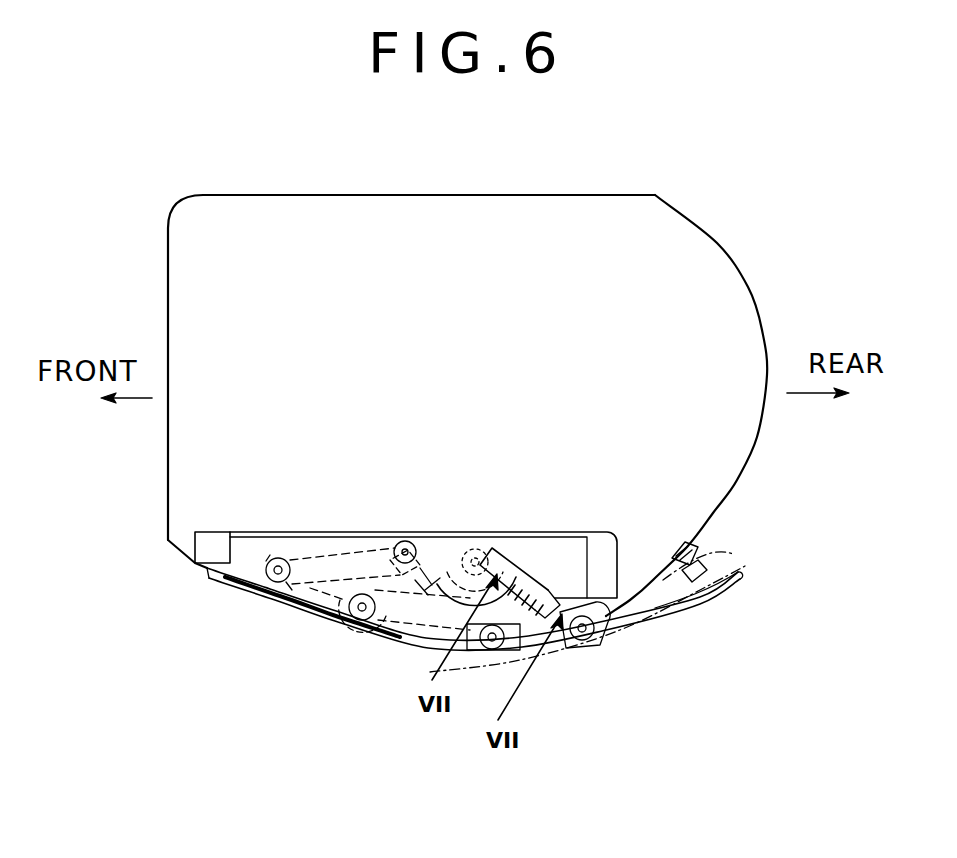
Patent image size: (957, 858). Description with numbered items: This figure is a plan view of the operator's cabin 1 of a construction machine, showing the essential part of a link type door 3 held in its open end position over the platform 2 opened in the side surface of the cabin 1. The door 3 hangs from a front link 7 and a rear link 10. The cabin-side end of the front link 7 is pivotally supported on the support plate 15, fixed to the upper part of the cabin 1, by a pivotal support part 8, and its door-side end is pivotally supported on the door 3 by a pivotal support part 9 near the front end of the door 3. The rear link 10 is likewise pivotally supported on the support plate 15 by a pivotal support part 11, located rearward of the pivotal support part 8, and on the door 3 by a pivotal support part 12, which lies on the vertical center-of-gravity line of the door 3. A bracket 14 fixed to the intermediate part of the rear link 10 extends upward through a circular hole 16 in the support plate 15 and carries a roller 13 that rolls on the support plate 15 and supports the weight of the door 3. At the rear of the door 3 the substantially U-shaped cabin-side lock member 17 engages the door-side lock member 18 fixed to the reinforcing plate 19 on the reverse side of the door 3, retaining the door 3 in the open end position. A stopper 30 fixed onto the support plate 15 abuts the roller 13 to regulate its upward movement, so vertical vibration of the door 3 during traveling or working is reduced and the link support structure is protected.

The operator's cabin 1 is at (717, 243).
The platform 2 is at (572, 641).
The door 3 is at (268, 602).
The front link 7 is at (312, 560).
The pivotal support part 8 is at (405, 540).
The pivotal support part 9 is at (278, 557).
The rear link 10 is at (392, 643).
The pivotal support part 11 is at (498, 548).
The pivotal support part 12 is at (343, 622).
The roller 13 is at (390, 557).
The bracket 14 is at (437, 584).
The support plate 15 is at (536, 550).
The circular hole 16 is at (470, 648).
The cabin-side lock member 17 is at (705, 545).
The door-side lock member 18 is at (735, 555).
The reinforcing plate 19 is at (697, 600).
The stopper 30 is at (548, 596).